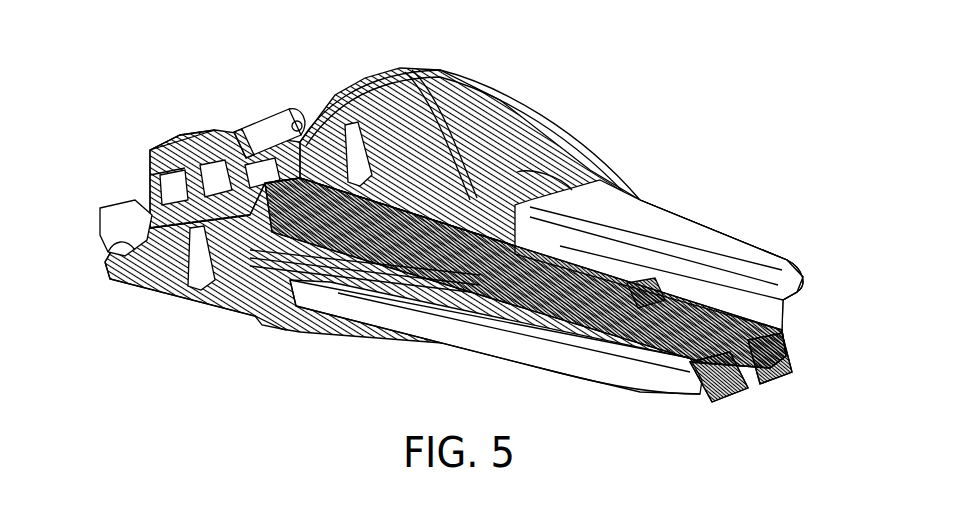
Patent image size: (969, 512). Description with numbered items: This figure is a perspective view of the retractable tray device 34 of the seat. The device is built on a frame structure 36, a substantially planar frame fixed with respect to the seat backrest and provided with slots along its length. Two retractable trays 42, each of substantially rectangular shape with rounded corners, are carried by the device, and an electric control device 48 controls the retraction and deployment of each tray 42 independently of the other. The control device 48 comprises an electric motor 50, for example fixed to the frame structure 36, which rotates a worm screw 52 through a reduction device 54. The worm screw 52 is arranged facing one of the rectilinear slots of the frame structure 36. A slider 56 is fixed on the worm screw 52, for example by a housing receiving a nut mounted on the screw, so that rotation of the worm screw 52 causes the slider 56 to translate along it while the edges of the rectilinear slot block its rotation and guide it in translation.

The retractable tray device 34 is at (138, 98).
The frame structure 36 is at (252, 310).
The retractable tray 42 is at (693, 212).
The control device 48 is at (122, 170).
The electric motor 50 is at (263, 147).
The worm screw 52 is at (527, 267).
The reduction device 54 is at (188, 172).
The slider 56 is at (760, 352).